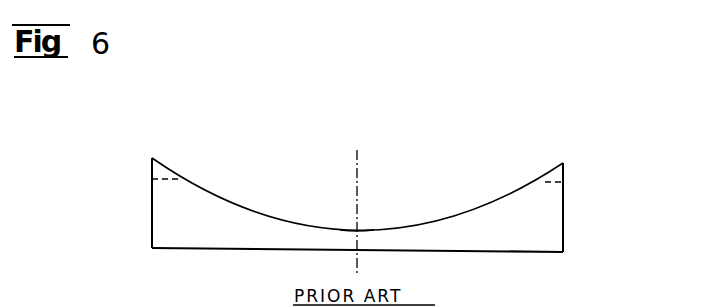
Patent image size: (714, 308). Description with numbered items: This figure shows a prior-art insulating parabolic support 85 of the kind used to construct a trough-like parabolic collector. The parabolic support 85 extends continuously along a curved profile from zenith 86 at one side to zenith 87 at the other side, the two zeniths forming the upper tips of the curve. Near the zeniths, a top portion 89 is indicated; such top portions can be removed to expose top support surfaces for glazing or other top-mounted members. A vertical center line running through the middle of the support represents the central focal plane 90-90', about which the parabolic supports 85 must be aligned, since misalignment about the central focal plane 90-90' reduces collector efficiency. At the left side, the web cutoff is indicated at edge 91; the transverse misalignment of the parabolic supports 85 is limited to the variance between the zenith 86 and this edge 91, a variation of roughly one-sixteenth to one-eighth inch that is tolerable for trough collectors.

The parabolic support 85 is at (150, 168).
The zenith 86 is at (152, 160).
The zenith 87 is at (567, 163).
The top portion 89 is at (563, 178).
The central focal plane 90 is at (338, 248).
The central focal plane 90' is at (335, 198).
The edge 91 is at (152, 213).